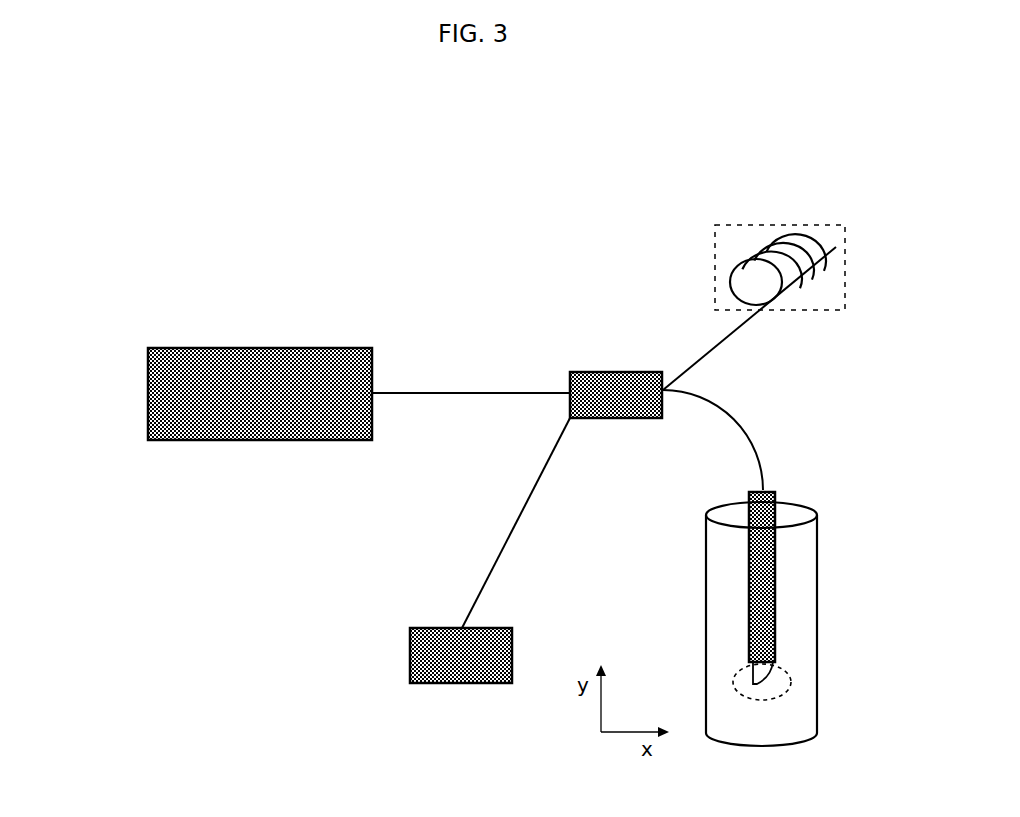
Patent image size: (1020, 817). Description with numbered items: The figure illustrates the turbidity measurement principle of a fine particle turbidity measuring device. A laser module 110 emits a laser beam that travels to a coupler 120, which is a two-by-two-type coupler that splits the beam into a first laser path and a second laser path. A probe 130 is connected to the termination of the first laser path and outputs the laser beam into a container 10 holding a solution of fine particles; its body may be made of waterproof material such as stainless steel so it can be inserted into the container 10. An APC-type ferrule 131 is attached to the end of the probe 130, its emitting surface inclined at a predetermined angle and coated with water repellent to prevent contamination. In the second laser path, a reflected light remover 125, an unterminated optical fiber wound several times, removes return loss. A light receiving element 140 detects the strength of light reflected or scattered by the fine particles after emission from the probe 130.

The container 10 is at (818, 513).
The laser module 110 is at (145, 392).
The coupler 120 is at (610, 372).
The reflected light remover 125 is at (713, 273).
The probe 130 is at (777, 578).
The APC-type ferrule 131 is at (790, 678).
The light receiving element 140 is at (407, 657).